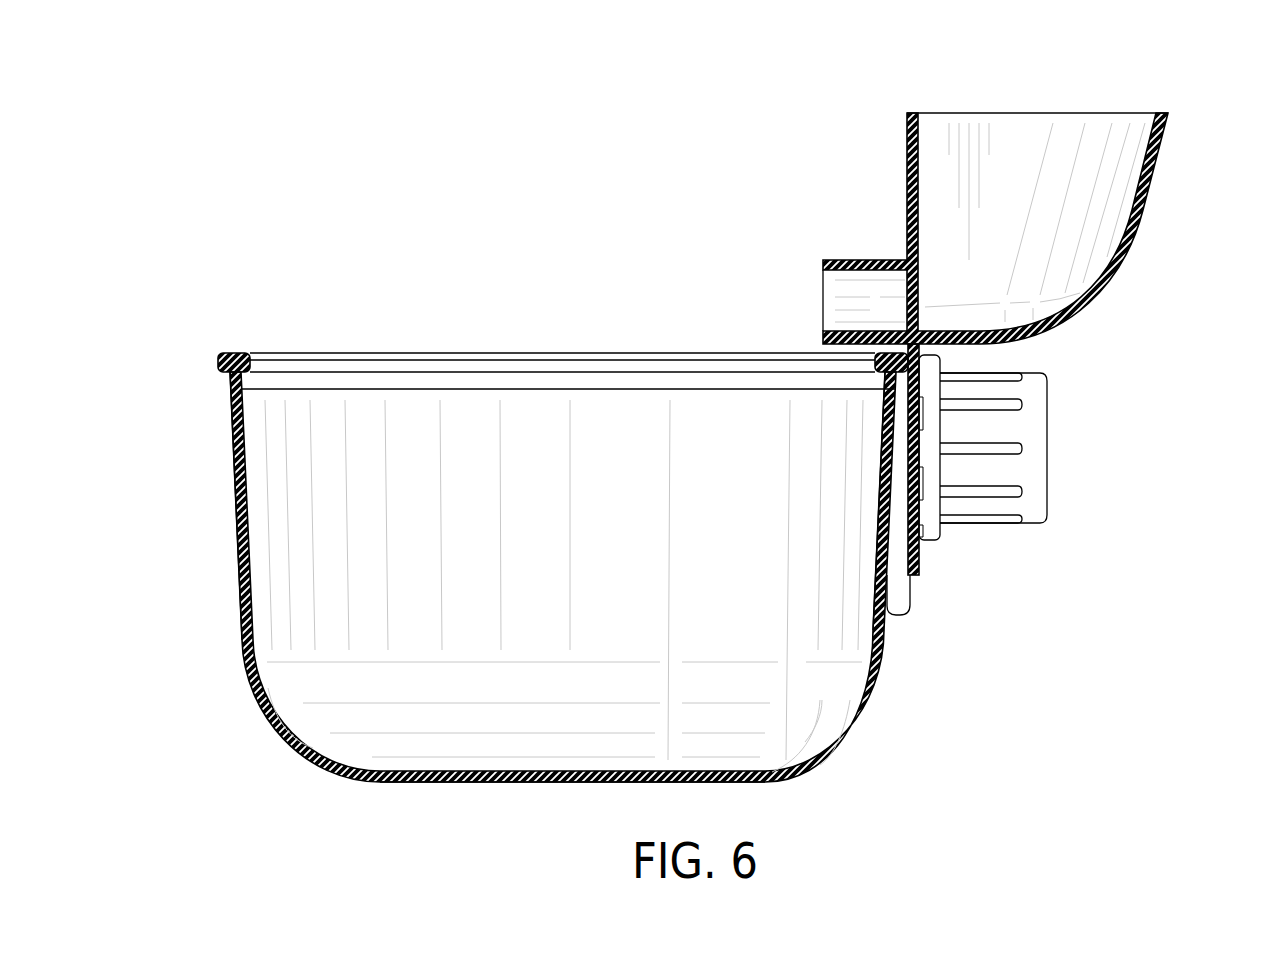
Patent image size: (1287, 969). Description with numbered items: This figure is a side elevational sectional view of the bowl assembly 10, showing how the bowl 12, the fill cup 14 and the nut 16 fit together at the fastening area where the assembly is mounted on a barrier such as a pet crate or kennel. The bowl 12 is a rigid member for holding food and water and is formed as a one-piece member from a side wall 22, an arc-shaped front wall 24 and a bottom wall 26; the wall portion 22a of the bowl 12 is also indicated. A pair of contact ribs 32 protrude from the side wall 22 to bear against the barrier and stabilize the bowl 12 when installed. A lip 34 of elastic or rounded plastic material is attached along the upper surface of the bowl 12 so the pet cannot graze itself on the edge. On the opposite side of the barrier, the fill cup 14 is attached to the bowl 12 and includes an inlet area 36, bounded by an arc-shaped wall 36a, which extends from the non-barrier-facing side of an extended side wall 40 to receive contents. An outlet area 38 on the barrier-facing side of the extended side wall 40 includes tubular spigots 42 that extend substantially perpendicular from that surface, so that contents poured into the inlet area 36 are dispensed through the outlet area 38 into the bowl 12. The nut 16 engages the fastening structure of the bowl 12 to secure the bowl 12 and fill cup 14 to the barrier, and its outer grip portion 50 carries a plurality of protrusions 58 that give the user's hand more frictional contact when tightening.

The bowl assembly 10 is at (586, 158).
The bowl 12 is at (529, 301).
The fill cup 14 is at (1169, 63).
The nut 16 is at (1082, 387).
The side wall 22 is at (880, 685).
The bowl wall 22a is at (878, 650).
The arc-shaped front wall 24 is at (235, 515).
The bottom wall 26 is at (432, 782).
The contact ribs 32 is at (911, 600).
The lip 34 is at (218, 362).
The inlet area 36 is at (1045, 103).
The arc-shaped wall 36a is at (1168, 120).
The outlet area 38 is at (817, 253).
The extended side wall 40 is at (920, 560).
The spigots 42 is at (823, 262).
The outer grip portion 50 is at (1030, 472).
The protrusions 58 is at (1010, 437).